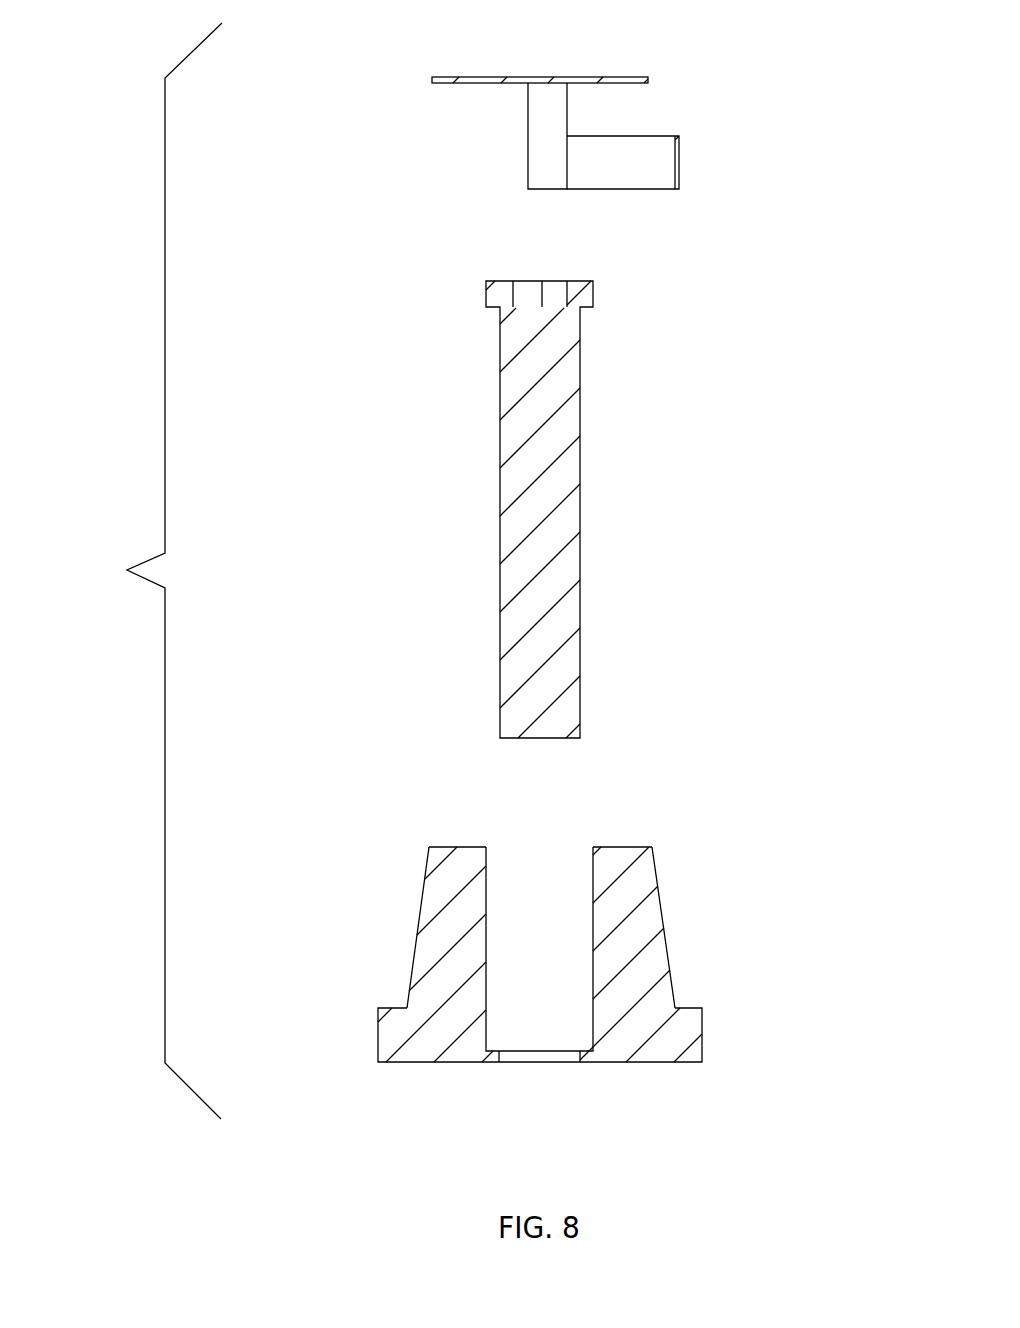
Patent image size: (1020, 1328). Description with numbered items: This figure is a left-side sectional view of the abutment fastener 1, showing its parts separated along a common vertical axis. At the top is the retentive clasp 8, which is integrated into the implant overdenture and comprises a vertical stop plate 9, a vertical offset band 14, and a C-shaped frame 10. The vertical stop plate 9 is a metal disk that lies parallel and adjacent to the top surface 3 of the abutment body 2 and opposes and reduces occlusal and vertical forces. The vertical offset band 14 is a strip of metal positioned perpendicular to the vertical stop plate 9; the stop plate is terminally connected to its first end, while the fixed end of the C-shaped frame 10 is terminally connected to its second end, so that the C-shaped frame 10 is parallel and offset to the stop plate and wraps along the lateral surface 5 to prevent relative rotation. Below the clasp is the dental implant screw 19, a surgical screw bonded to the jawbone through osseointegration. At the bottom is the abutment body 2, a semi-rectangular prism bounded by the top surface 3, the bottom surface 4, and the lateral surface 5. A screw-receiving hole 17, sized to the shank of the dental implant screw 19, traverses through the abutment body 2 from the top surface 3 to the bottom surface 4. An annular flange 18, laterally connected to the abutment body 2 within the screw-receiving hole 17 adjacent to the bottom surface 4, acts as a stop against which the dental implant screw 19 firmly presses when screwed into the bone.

The abutment fastener 1 is at (153, 571).
The abutment body 2 is at (512, 956).
The top surface 3 is at (616, 844).
The bottom surface 4 is at (651, 1066).
The lateral surface 5 is at (665, 913).
The retentive clasp 8 is at (607, 133).
The vertical stop plate 9 is at (558, 79).
The C-shaped frame 10 is at (640, 178).
The vertical offset band 14 is at (535, 152).
The screw-receiving hole 17 is at (546, 868).
The annular flange 18 is at (494, 1058).
The dental implant screw 19 is at (572, 598).